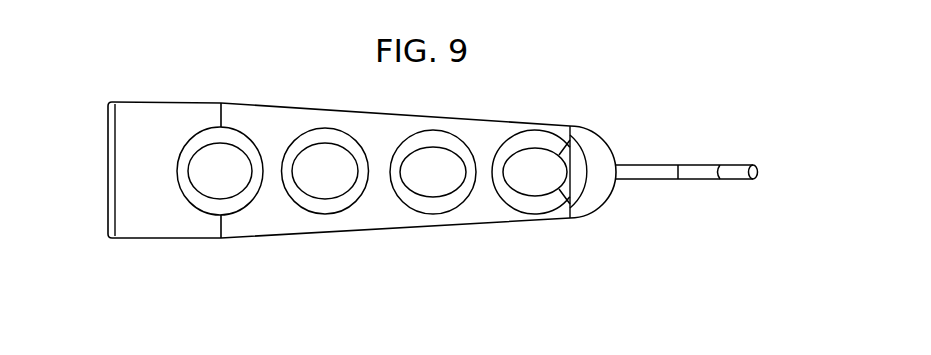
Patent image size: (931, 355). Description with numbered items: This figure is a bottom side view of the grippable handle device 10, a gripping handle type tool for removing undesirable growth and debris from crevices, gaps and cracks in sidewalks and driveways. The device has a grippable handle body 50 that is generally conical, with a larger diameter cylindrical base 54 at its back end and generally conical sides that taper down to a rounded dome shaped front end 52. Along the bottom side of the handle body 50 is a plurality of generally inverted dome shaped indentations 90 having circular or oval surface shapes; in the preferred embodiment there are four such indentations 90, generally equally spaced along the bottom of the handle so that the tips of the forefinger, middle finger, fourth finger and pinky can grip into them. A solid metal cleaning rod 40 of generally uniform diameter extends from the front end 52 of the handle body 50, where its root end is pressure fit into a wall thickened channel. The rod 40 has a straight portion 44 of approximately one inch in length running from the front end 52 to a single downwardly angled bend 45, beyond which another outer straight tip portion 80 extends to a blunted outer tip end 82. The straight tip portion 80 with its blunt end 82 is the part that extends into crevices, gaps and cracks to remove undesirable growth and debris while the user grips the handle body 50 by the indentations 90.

The gripping handle type tool 10 is at (667, 107).
The metal cleaning rod 40 is at (648, 172).
The straight portion 44 is at (630, 172).
The single downwardly angled bend 45 is at (700, 179).
The grippable handle body 50 is at (275, 128).
The rounded dome shaped front end 52 is at (586, 135).
The cylindrical base 54 is at (153, 107).
The straight tip portion 80 is at (738, 172).
The blunt end 82 is at (757, 179).
The grippable indentations 90 is at (537, 182).